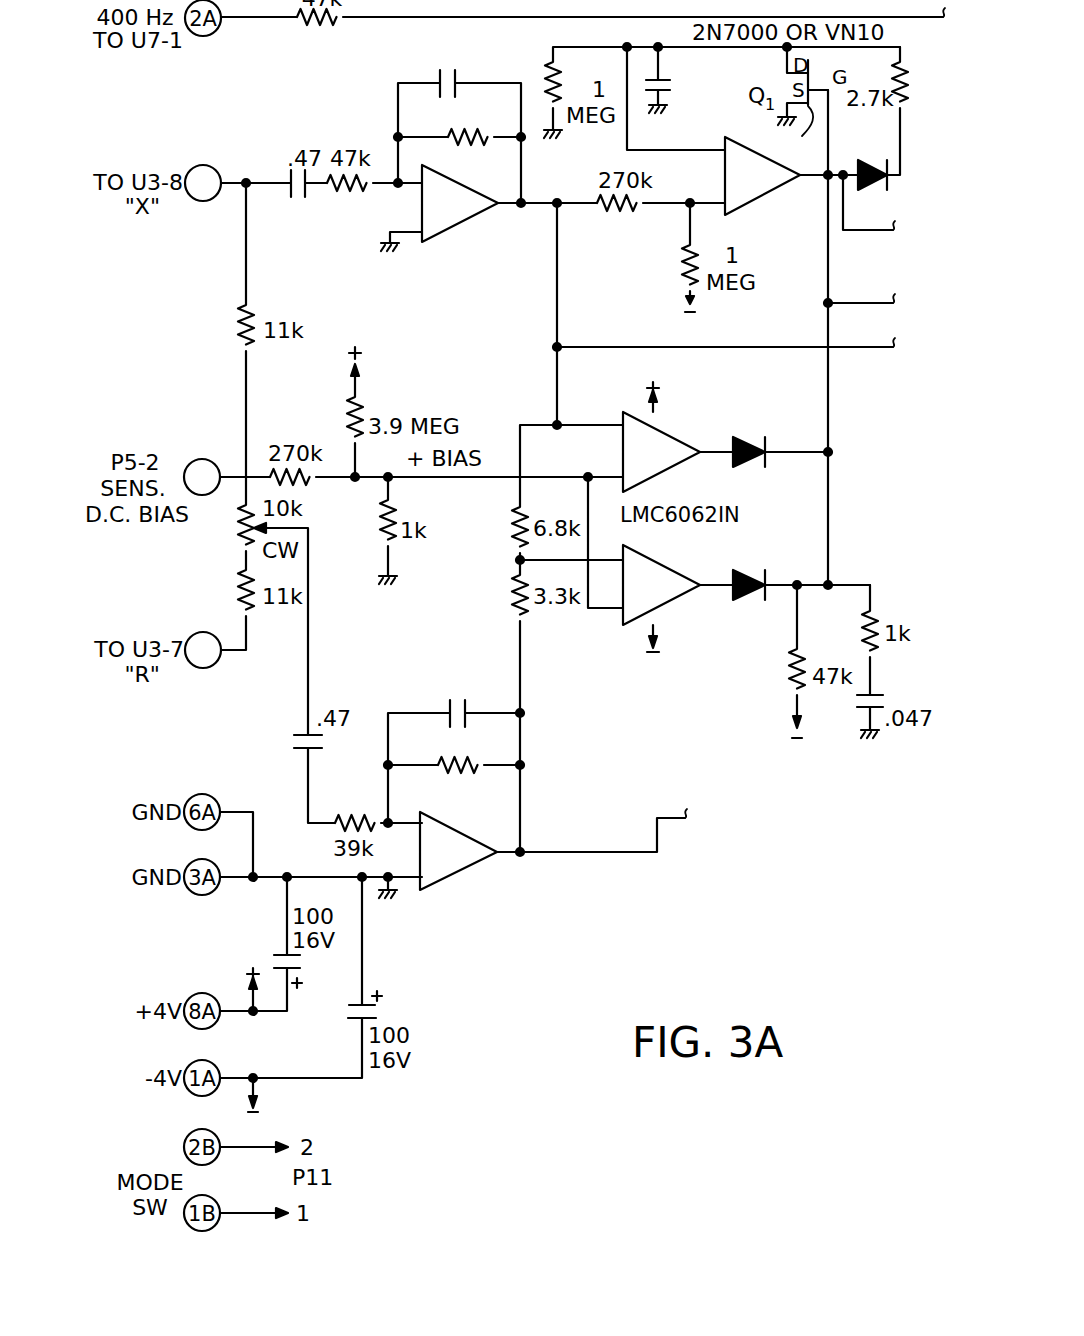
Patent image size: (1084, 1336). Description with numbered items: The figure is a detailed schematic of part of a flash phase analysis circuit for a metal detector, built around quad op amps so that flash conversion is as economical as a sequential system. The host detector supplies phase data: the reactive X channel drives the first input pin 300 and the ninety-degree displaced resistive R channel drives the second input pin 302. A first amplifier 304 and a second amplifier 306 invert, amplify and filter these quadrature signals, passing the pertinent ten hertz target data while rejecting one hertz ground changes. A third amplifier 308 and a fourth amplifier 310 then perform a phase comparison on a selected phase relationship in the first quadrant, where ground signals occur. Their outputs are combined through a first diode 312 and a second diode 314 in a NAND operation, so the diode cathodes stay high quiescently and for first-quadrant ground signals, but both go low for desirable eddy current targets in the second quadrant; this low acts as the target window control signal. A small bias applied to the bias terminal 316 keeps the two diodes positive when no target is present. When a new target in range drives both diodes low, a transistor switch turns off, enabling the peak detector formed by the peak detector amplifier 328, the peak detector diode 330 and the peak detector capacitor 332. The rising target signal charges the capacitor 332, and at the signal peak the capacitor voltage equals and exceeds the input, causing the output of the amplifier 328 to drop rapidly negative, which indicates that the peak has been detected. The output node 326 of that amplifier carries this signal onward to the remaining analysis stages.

The pin 5A 300 is at (206, 166).
The pin 4A 302 is at (199, 632).
The amplifier U1A 304 is at (458, 237).
The amplifier U1B 306 is at (460, 871).
The amplifier U2A 308 is at (622, 420).
The amplifier U2B 310 is at (624, 620).
The diode D1 312 is at (732, 444).
The diode D2 314 is at (728, 579).
The terminal 7A 316 is at (202, 460).
The output node of amplifier U1C 326 is at (726, 337).
The amplifier U1C 328 is at (758, 205).
The diode D3 330 is at (893, 188).
The capacitor C1 332 is at (662, 82).